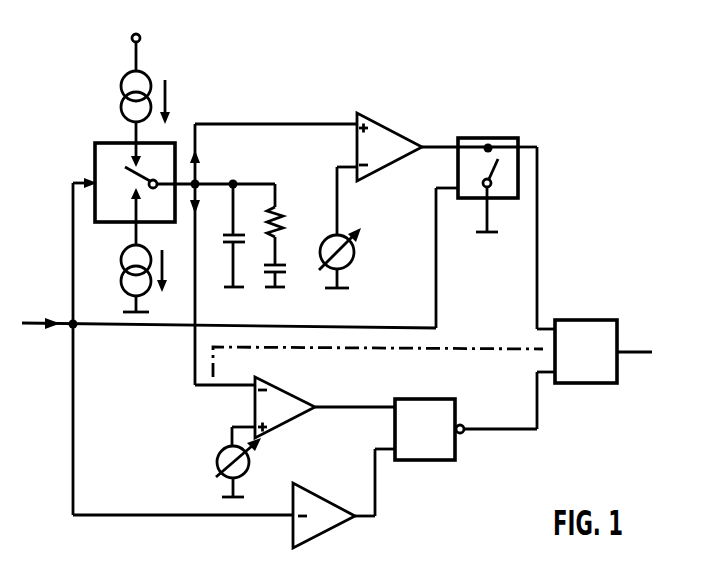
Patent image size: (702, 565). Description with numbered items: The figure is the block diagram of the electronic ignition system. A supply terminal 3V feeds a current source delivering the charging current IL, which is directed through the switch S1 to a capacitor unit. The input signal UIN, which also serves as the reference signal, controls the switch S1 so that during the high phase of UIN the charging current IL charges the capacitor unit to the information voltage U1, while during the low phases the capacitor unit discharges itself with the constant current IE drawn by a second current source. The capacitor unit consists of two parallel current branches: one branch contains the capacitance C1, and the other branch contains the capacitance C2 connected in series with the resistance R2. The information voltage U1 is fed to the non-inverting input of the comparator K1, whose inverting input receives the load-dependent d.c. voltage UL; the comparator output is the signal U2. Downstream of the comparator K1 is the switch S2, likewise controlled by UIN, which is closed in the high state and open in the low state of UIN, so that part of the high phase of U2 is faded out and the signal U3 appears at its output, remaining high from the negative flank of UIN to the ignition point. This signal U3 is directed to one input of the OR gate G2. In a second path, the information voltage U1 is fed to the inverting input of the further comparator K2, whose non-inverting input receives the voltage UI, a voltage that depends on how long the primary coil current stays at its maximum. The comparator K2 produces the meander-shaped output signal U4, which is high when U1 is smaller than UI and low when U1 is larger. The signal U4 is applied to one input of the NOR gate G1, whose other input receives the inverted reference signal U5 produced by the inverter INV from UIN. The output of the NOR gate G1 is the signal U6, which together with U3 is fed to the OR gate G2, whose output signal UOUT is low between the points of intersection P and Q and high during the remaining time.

The +3V supply terminal 3V is at (157, 48).
The charging current IL is at (156, 107).
The switch S1 is at (107, 141).
The constant current IE is at (155, 267).
The input signal UIN is at (240, 349).
The information voltage U1 is at (233, 183).
The capacitance C1 is at (227, 235).
The resistance R2 is at (287, 224).
The capacitance C2 is at (288, 275).
The comparator K1 is at (387, 135).
The d.c. voltage UL is at (371, 266).
The signal U2 is at (433, 146).
The switch S2 is at (490, 137).
The signal U3 is at (538, 251).
The OR gate G2 is at (595, 321).
The output signal UOUT is at (643, 335).
The further comparator K2 is at (282, 395).
The d.c. voltage UI is at (217, 459).
The output signal U4 is at (333, 408).
The NOR gate G1 is at (441, 461).
The signal U6 is at (518, 433).
The inverter INV is at (324, 506).
The inverted reference signal U5 is at (381, 500).